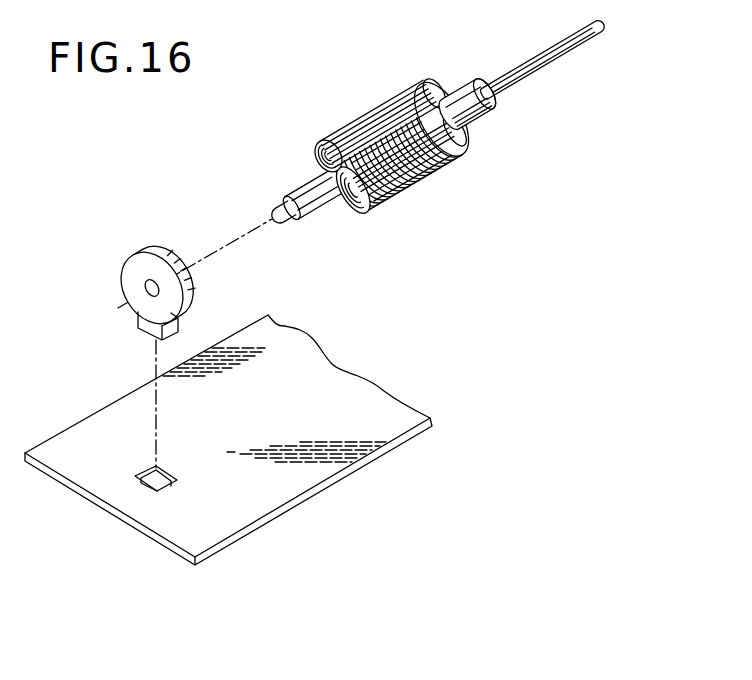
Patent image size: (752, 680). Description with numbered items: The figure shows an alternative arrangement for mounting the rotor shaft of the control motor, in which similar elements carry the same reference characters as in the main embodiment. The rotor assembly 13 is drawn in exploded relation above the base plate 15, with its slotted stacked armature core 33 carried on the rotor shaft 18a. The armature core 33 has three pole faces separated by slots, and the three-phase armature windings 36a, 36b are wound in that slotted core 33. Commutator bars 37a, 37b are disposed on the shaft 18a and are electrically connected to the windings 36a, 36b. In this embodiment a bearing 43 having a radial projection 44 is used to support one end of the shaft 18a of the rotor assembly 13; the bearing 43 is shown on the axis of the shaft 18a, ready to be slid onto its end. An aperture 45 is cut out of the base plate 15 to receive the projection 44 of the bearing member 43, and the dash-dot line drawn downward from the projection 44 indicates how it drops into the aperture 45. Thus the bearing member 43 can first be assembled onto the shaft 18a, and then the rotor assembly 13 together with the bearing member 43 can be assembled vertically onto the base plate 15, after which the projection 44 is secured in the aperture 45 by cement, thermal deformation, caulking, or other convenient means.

The rotor assembly 13 is at (363, 104).
The base plate 15 is at (274, 499).
The rotor shaft 18a is at (600, 40).
The armature core 33 is at (441, 172).
The armature winding 36a is at (327, 145).
The armature winding 36b is at (356, 216).
The commutator bar 37a is at (460, 100).
The commutator bar 37b is at (478, 122).
The bearing 43 is at (167, 262).
The radial projection 44 is at (150, 328).
The aperture 45 is at (158, 472).